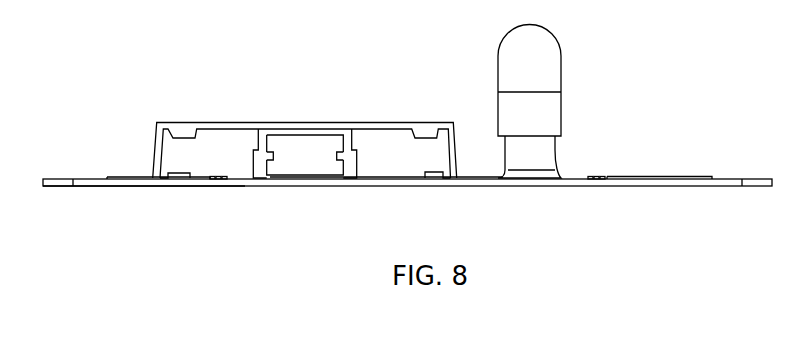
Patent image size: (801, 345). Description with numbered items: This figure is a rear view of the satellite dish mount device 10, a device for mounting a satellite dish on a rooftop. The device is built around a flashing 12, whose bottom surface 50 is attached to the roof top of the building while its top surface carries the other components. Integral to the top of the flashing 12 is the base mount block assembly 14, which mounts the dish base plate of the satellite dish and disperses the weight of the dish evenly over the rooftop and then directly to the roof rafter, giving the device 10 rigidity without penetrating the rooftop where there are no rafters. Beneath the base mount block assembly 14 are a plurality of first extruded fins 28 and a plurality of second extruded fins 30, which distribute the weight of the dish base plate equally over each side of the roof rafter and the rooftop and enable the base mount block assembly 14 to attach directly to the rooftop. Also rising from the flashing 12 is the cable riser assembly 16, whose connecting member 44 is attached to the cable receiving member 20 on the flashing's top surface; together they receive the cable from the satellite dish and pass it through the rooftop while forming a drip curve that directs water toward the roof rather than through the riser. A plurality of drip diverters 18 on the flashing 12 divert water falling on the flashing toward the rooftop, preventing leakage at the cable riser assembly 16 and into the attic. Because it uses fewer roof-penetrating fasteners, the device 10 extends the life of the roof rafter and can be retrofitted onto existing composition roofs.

The satellite dish mount device 10 is at (322, 50).
The flashing 12 is at (747, 177).
The base mount block assembly 14 is at (218, 121).
The cable riser assembly 16 is at (553, 30).
The drip diverters 18 is at (662, 175).
The cable receiving member 20 is at (556, 153).
The first extruded fins 28 is at (173, 177).
The second extruded fins 30 is at (258, 160).
The connecting member 44 is at (561, 84).
The bottom surface 50 is at (125, 186).